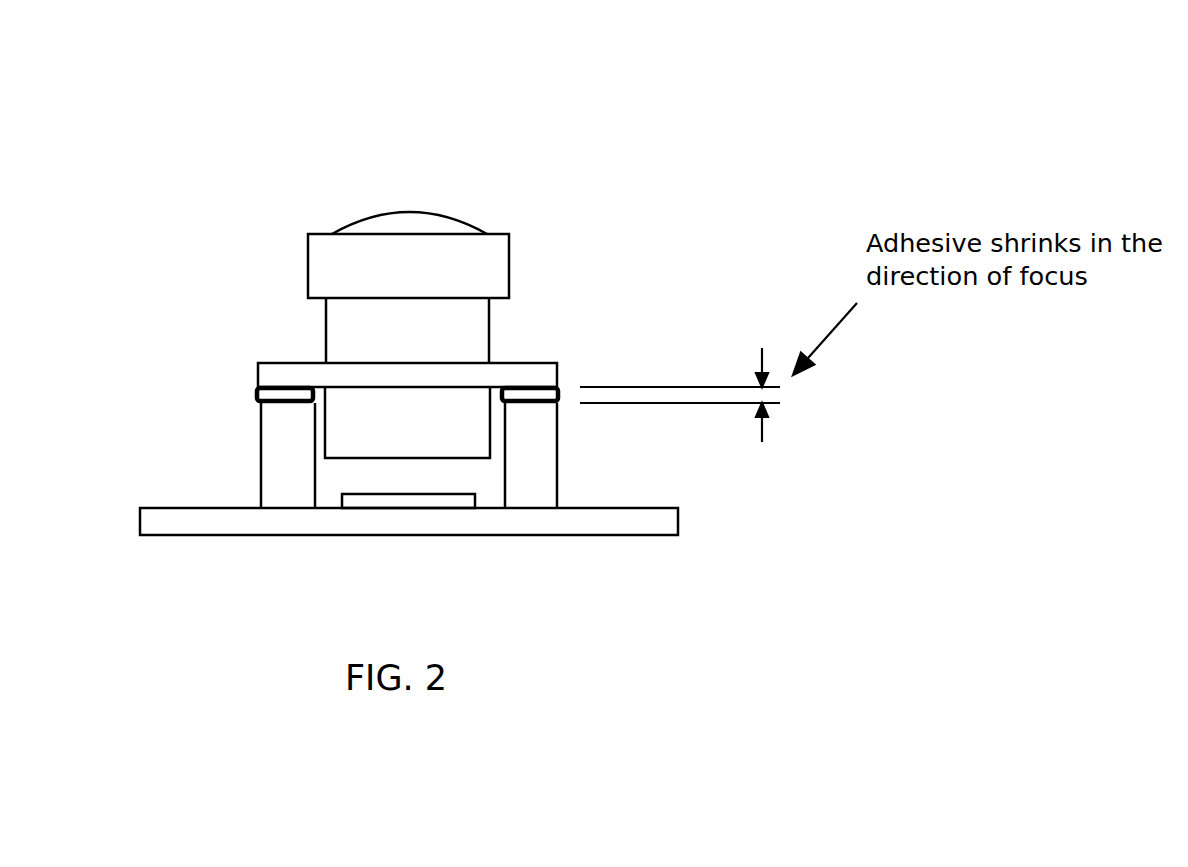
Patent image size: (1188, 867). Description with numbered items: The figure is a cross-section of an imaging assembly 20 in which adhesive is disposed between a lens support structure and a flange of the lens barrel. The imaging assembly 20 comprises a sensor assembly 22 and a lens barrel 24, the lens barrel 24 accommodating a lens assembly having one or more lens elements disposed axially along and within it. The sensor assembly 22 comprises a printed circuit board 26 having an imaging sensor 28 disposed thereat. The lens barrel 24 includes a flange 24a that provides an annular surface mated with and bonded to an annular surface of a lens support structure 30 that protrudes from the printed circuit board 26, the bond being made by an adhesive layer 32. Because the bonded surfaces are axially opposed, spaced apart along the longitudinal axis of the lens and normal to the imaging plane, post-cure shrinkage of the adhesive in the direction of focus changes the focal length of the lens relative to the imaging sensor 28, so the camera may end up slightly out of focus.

The imaging assembly 20 is at (535, 151).
The sensor assembly 22 is at (1028, 432).
The lens barrel 24 is at (534, 260).
The flange 24a is at (275, 362).
The printed circuit board 26 is at (677, 518).
The imaging sensor 28 is at (413, 495).
The lens support structure 30 is at (530, 436).
The adhesive 32 is at (562, 395).